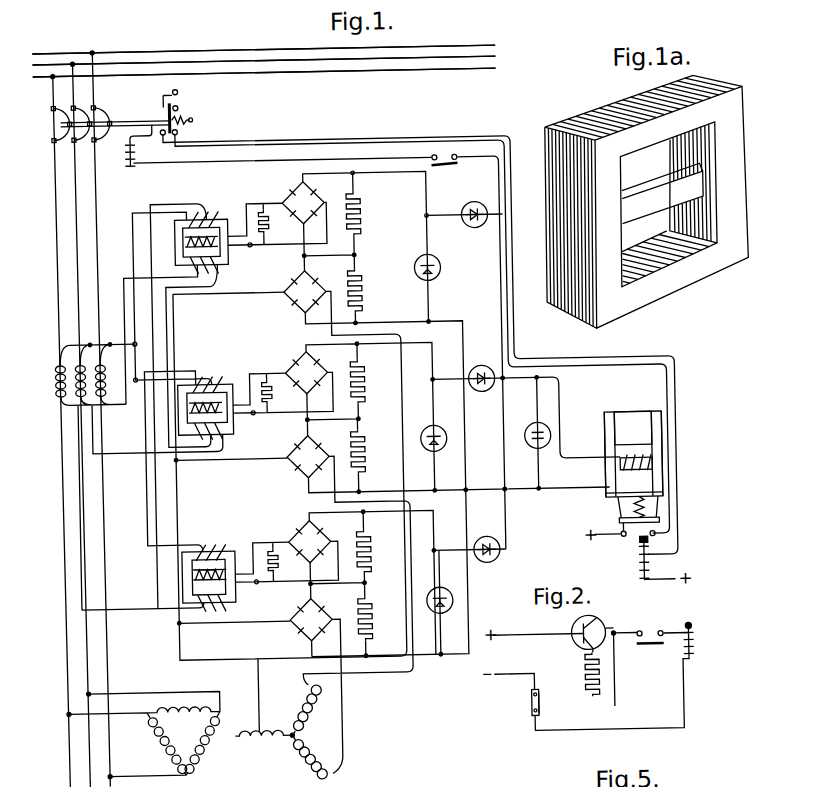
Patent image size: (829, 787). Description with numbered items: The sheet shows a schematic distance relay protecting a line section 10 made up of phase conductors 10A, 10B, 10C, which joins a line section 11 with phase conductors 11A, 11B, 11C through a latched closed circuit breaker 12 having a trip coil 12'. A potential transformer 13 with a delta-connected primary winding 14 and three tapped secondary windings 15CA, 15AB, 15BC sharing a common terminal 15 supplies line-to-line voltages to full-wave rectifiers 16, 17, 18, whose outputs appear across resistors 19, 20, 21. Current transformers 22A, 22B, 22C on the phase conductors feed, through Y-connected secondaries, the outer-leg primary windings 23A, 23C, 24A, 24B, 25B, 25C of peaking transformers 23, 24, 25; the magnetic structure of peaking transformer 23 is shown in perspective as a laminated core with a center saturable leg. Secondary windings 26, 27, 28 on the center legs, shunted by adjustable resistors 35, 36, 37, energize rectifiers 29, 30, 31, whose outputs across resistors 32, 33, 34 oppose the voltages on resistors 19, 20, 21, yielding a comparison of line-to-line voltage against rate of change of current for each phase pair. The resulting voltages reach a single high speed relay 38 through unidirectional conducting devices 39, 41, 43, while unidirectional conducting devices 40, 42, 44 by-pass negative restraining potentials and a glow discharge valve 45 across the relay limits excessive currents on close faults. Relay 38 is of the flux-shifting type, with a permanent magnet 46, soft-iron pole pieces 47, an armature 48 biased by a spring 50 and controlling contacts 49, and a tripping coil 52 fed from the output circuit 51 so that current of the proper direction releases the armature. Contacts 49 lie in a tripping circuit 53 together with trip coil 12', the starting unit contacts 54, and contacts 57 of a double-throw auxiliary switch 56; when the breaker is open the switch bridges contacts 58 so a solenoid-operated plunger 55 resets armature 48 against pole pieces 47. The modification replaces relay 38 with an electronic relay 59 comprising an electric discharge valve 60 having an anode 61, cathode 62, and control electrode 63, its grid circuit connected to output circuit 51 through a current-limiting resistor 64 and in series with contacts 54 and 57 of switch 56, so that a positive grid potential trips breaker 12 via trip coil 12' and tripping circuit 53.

In FIG. 1, the line section 10 is at (103, 160).
In FIG. 1, the phase conductor 10A is at (60, 205).
In FIG. 1, the phase conductor 10B is at (80, 229).
In FIG. 1, the phase conductor 10C is at (100, 256).
In FIG. 1, the line section 11 is at (130, 52).
In FIG. 1, the phase conductor 11A is at (186, 69).
In FIG. 1, the phase conductor 11B is at (220, 58).
In FIG. 1, the phase conductor 11C is at (256, 47).
In FIG. 1, the circuit breaker 12 is at (101, 123).
In FIG. 1, the trip coil 12' is at (129, 158).
In FIG. 2, the trip coil 12' is at (708, 645).
In FIG. 1, the potential transformer 13 is at (240, 692).
In FIG. 1, the delta-connected primary winding 14 is at (144, 735).
In FIG. 1, the common terminal 15 is at (266, 728).
In FIG. 1, the secondary winding 15AB is at (263, 743).
In FIG. 1, the secondary winding 15BC is at (319, 710).
In FIG. 1, the secondary winding 15CA is at (332, 759).
In FIG. 1, the full-wave rectifier 16 is at (311, 619).
In FIG. 1, the full-wave rectifier 17 is at (308, 456).
In FIG. 1, the full-wave rectifier 18 is at (305, 291).
In FIG. 1, the resistor 19 is at (368, 619).
In FIG. 1, the resistor 20 is at (364, 456).
In FIG. 1, the resistor 21 is at (364, 292).
In FIG. 1, the current transformer 22A is at (58, 362).
In FIG. 1, the current transformer 22B is at (74, 400).
In FIG. 1, the current transformer 22C is at (103, 392).
In FIG. 1, the peaking transformer 23 is at (197, 540).
In FIG. 1A, the peaking transformer 23 is at (607, 147).
In FIG. 1, the primary winding 23A is at (218, 600).
In FIG. 1, the primary winding 23C is at (216, 541).
In FIG. 1, the peaking transformer 24 is at (196, 373).
In FIG. 1, the primary winding 24A is at (213, 375).
In FIG. 1, the primary winding 24B is at (220, 434).
In FIG. 1, the peaking transformer 25 is at (188, 224).
In FIG. 1, the primary winding 25B is at (216, 209).
In FIG. 1, the primary winding 25C is at (216, 266).
In FIG. 1, the secondary winding 26 is at (226, 576).
In FIG. 1, the secondary winding 27 is at (226, 406).
In FIG. 1, the secondary winding 28 is at (189, 240).
In FIG. 1, the full-wave rectifier 29 is at (309, 541).
In FIG. 1, the full-wave rectifier 30 is at (306, 372).
In FIG. 1, the full-wave rectifier 31 is at (303, 202).
In FIG. 1, the resistor 32 is at (368, 549).
In FIG. 1, the resistor 33 is at (365, 384).
In FIG. 1, the resistor 34 is at (364, 212).
In FIG. 1, the adjustable resistor 35 is at (289, 562).
In FIG. 1, the adjustable resistor 36 is at (282, 397).
In FIG. 1, the adjustable resistor 37 is at (280, 226).
In FIG. 1, the high speed relay 38 is at (645, 408).
In FIG. 1, the unidirectional conducting device 39 is at (478, 564).
In FIG. 1, the unidirectional conducting device 40 is at (448, 612).
In FIG. 1, the unidirectional conducting device 41 is at (480, 393).
In FIG. 1, the unidirectional conducting device 42 is at (444, 450).
In FIG. 1, the unidirectional conducting device 43 is at (478, 229).
In FIG. 1, the unidirectional conducting device 44 is at (440, 275).
In FIG. 1, the glow discharge valve 45 is at (529, 449).
In FIG. 1, the permanent magnet 46 is at (633, 428).
In FIG. 1, the pole pieces 47 is at (606, 435).
In FIG. 1, the armature 48 is at (618, 526).
In FIG. 1, the contacts 49 is at (621, 542).
In FIG. 1, the spring 50 is at (604, 500).
In FIG. 1, the output circuit 51 is at (600, 468).
In FIG. 2, the output circuit 51 is at (588, 702).
In FIG. 1, the tripping coil 52 is at (652, 471).
In FIG. 1, the tripping circuit 53 is at (508, 174).
In FIG. 2, the tripping circuit 53 is at (678, 702).
In FIG. 1, the contacts of starting unit 54 is at (319, 355).
In FIG. 2, the contacts of starting unit 54 is at (651, 650).
In FIG. 1, the solenoid-operated plunger 55 is at (636, 576).
In FIG. 1, the double-throw auxiliary switch 56 is at (173, 113).
In FIG. 2, the double-throw auxiliary switch 56 is at (534, 708).
In FIG. 1, the contacts 57 is at (169, 92).
In FIG. 2, the contacts 57 is at (526, 704).
In FIG. 1, the contacts 58 is at (184, 98).
In FIG. 2, the electronic relay 59 is at (559, 628).
In FIG. 2, the electric discharge valve 60 is at (598, 622).
In FIG. 2, the anode 61 is at (577, 640).
In FIG. 2, the cathode 62 is at (604, 634).
In FIG. 2, the control electrode 63 is at (584, 651).
In FIG. 2, the current-limiting resistor 64 is at (581, 675).